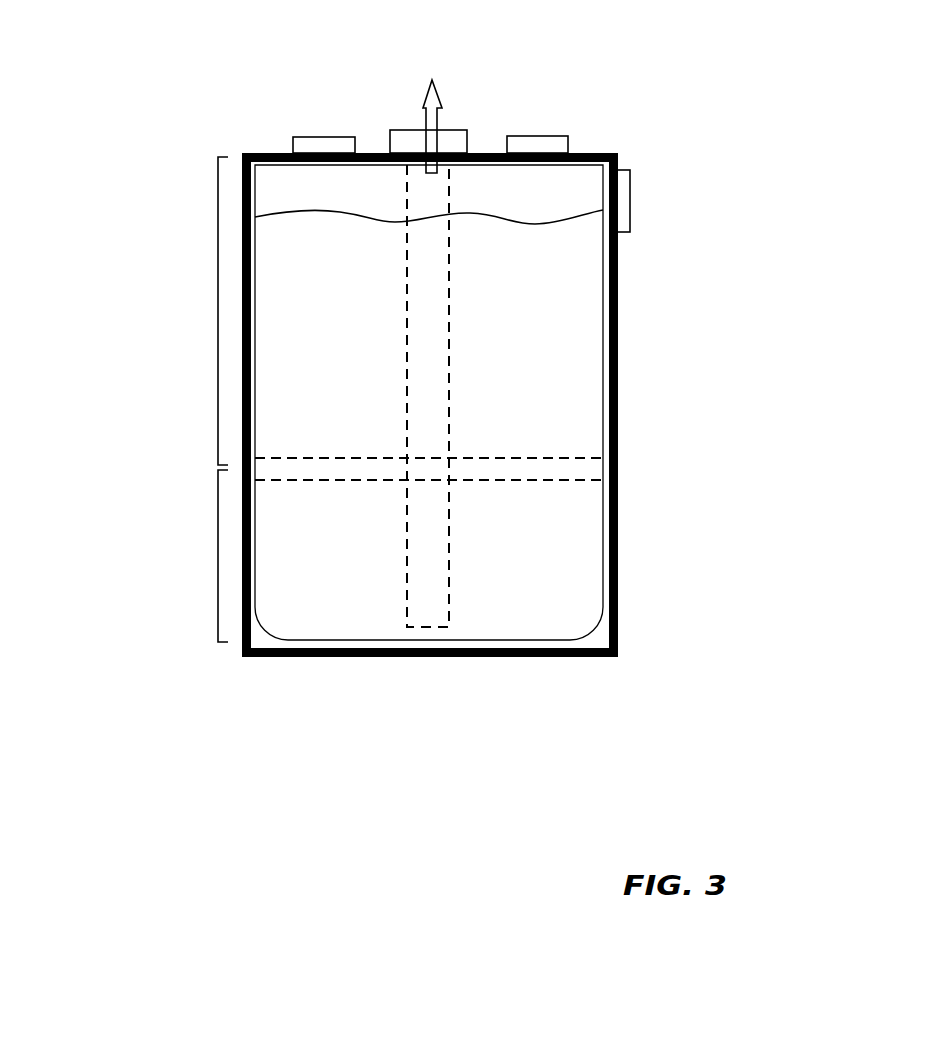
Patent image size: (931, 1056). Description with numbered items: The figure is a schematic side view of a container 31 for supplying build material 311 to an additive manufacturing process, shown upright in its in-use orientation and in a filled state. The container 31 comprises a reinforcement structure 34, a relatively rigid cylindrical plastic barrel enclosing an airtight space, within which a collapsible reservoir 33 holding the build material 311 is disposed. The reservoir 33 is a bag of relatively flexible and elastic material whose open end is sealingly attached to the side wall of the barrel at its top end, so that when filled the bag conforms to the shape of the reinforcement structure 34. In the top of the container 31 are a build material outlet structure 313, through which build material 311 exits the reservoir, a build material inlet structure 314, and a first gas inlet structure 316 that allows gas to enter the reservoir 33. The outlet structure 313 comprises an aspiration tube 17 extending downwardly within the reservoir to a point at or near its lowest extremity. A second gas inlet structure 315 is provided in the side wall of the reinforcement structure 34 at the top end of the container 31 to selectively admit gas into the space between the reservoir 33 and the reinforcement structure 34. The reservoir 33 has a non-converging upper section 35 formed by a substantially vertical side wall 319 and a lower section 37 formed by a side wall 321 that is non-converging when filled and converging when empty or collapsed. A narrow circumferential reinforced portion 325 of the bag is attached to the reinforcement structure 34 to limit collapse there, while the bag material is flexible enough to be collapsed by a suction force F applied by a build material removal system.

The container 31 is at (697, 68).
The substantially vertical side wall 319 is at (250, 270).
The side wall 321 is at (597, 630).
The collapsible reservoir 33 is at (500, 292).
The aspiration tube 17 is at (433, 428).
The reinforced portion 325 is at (517, 470).
The first gas inlet structure 316 is at (308, 143).
The build material outlet structure 313 is at (443, 135).
The build material inlet structure 314 is at (547, 143).
The second gas inlet structure 315 is at (627, 198).
The upper section 35 is at (218, 312).
The lower section 37 is at (218, 556).
The reinforcement structure 34 is at (242, 592).
The build material 311 is at (375, 368).
The suction force F is at (425, 112).